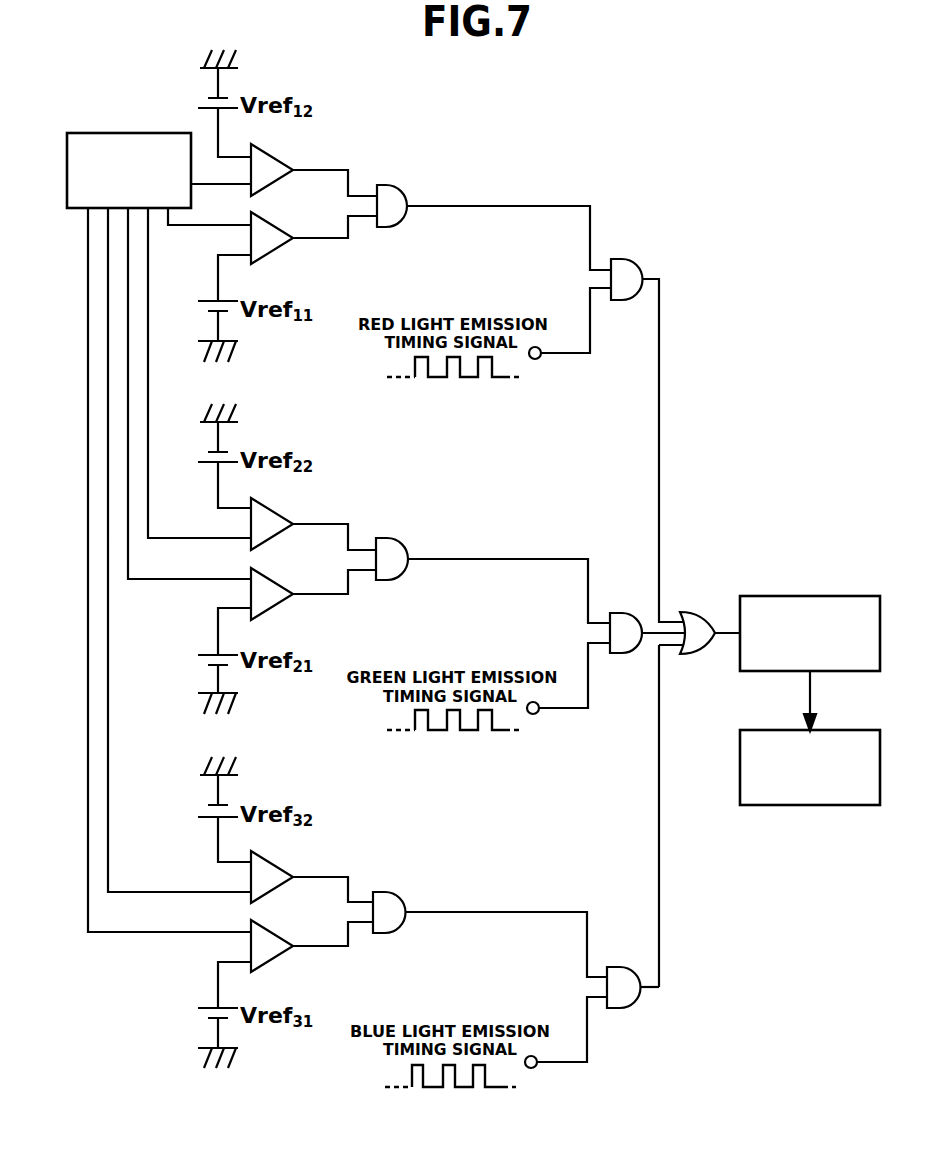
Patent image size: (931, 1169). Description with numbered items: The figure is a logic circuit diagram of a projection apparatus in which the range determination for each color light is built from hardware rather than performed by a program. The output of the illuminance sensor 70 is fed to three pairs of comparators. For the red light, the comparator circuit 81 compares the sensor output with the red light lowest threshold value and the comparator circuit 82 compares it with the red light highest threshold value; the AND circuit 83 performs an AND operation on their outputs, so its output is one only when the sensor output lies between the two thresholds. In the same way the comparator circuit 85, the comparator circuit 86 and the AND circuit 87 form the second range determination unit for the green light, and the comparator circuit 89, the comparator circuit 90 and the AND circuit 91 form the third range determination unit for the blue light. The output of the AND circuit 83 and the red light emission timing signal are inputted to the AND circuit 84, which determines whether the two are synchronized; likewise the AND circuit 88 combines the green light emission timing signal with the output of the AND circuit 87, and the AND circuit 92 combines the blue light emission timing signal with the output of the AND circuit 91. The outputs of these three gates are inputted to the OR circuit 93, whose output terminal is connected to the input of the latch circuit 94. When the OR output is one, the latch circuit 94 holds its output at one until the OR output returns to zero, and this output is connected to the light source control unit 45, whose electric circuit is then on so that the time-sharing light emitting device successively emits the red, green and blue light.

The illuminance sensor 70 is at (122, 132).
The comparator circuit 81 is at (270, 216).
The comparator circuit 82 is at (270, 150).
The AND circuit 83 is at (398, 185).
The AND circuit 84 is at (637, 262).
The comparator circuit 85 is at (270, 574).
The comparator circuit 86 is at (270, 504).
The AND circuit 87 is at (397, 538).
The AND circuit 88 is at (618, 612).
The comparator circuit 89 is at (270, 926).
The comparator circuit 90 is at (270, 857).
The AND circuit 91 is at (394, 892).
The AND circuit 92 is at (628, 1008).
The OR circuit 93 is at (688, 612).
The latch circuit 94 is at (822, 596).
The light source control unit 45 is at (822, 730).